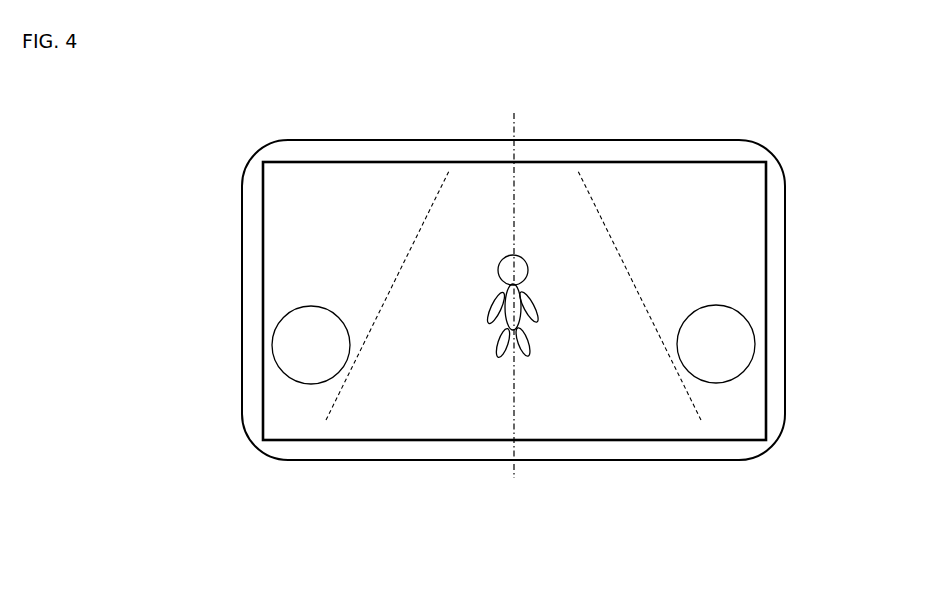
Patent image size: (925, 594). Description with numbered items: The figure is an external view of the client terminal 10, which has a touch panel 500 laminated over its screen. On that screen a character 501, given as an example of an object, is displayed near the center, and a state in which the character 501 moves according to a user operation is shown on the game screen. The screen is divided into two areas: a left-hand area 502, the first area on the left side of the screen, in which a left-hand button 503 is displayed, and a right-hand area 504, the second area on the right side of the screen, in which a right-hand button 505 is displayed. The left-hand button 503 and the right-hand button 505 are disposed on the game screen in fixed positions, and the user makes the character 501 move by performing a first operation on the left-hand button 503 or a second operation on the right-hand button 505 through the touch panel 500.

The client terminal 10 is at (648, 120).
The touch panel 500 is at (746, 161).
The character 501 is at (538, 309).
The left-hand area 502 is at (274, 207).
The left-hand button 503 is at (272, 343).
The right-hand area 504 is at (757, 199).
The right-hand button 505 is at (756, 343).